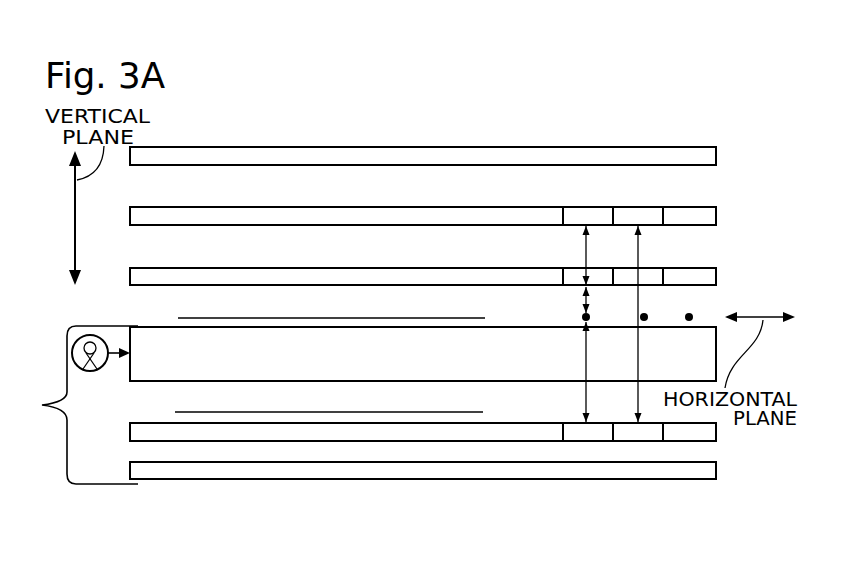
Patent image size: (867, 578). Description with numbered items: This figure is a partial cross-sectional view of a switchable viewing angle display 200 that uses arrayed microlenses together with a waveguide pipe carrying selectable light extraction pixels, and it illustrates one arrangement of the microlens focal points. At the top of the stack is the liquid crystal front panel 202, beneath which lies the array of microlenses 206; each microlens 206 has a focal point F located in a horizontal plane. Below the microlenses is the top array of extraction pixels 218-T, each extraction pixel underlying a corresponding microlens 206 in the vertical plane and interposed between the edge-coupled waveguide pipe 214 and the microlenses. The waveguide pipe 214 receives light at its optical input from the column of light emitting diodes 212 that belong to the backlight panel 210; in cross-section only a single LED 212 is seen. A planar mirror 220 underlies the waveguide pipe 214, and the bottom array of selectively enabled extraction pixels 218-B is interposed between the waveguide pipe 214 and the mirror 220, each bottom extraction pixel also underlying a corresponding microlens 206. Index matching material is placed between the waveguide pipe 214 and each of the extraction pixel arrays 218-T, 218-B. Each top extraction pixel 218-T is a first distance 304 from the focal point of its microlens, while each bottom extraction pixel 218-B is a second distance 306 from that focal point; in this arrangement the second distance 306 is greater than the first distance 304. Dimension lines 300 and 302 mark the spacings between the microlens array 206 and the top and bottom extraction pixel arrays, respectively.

The display 200 is at (269, 116).
The liquid crystal front panel 202 is at (415, 148).
The microlens 206 is at (628, 214).
The top array of extraction pixels 218-T is at (712, 276).
The bottom array of selectively enabled extraction pixels 218-B is at (710, 432).
The edge-coupled waveguide pipe 214 is at (483, 365).
The light emitting diode 212 is at (90, 371).
The backlight panel 210 is at (42, 405).
The planar mirror 220 is at (406, 470).
The distance between microlens array and top extraction pixels 300 is at (585, 254).
The distance between microlens array and bottom extraction pixels 302 is at (640, 255).
The first distance 304 is at (584, 298).
The second distance 306 is at (585, 401).